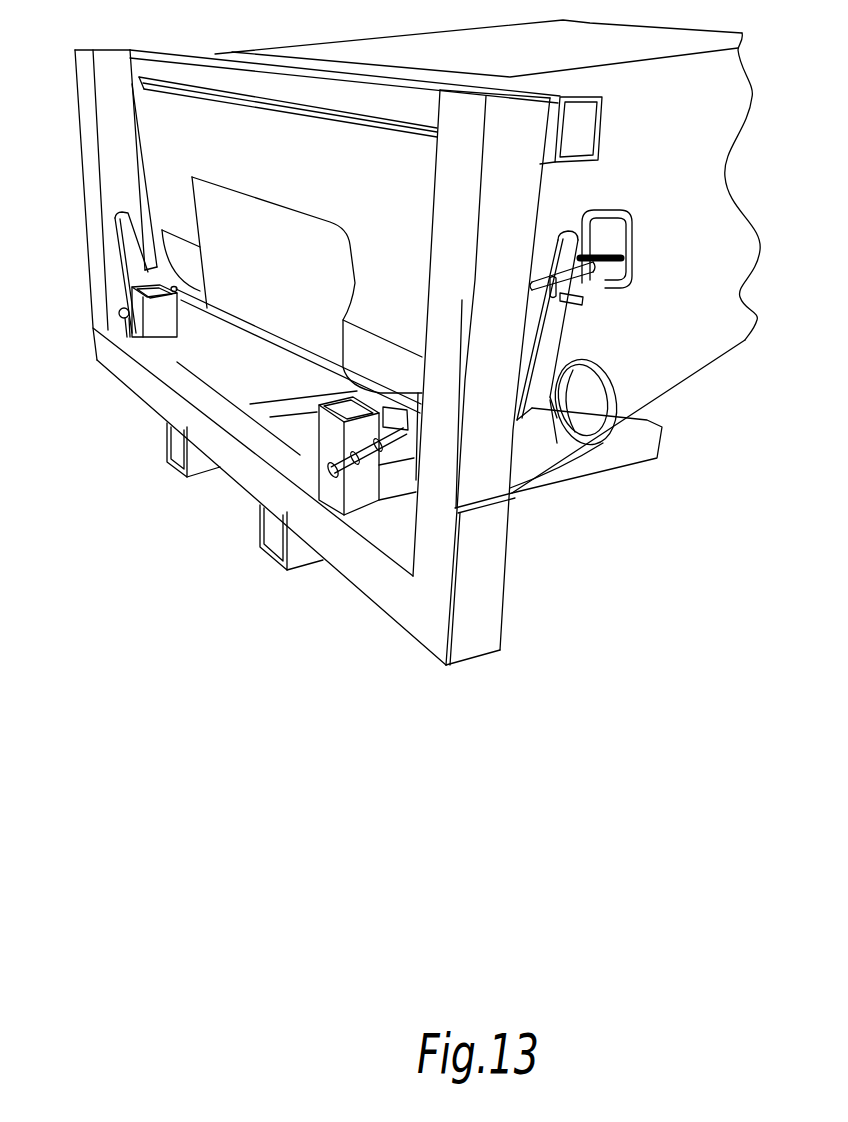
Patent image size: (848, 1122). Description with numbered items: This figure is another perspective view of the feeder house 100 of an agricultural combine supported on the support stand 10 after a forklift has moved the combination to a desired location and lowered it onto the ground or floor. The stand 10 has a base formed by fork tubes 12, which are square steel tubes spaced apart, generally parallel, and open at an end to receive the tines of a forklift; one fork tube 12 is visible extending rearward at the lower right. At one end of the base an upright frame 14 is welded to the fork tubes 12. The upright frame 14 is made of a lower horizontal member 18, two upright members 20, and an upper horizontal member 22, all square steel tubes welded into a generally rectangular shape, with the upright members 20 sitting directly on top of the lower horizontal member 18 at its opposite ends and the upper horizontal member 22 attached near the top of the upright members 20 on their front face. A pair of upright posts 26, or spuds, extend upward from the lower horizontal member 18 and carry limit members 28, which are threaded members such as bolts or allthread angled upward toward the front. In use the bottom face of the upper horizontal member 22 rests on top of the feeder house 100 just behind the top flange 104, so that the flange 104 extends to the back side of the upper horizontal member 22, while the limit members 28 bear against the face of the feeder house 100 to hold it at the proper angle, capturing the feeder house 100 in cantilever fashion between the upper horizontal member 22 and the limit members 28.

The support stand 10 is at (488, 613).
The fork tubes 12 is at (633, 457).
The upright frame 14 is at (90, 174).
The lower horizontal member 18 is at (147, 390).
The upright members 20 is at (483, 467).
The upper horizontal member 22 is at (193, 53).
The upright posts 26 is at (307, 430).
The limit members 28 is at (323, 475).
The feeder house 100 is at (334, 185).
The top flange 104 is at (193, 92).